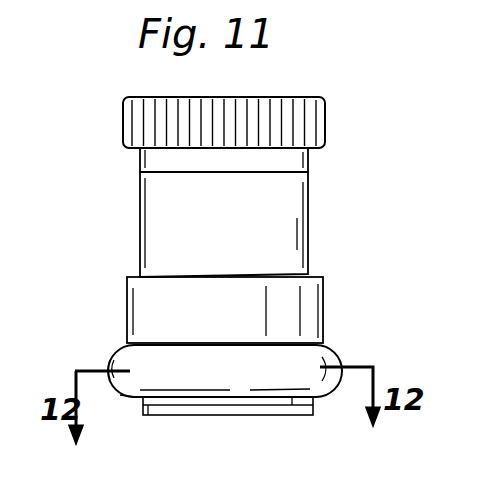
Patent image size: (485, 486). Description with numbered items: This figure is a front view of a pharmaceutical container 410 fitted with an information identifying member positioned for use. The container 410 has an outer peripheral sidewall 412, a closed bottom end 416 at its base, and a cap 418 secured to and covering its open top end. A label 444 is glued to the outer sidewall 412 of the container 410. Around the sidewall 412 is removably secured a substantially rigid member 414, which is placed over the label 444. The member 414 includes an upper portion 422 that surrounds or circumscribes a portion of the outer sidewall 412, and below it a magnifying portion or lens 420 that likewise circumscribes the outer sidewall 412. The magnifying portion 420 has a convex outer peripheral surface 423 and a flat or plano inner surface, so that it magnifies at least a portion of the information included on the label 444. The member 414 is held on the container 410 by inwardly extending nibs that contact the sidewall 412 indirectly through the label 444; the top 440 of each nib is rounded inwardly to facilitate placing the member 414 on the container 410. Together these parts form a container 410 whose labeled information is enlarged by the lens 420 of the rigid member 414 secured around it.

The pharmaceutical container 410 is at (103, 123).
The outer peripheral sidewall 412 is at (310, 160).
The substantially rigid member 414 is at (119, 291).
The closed bottom end 416 is at (246, 414).
The cap 418 is at (286, 108).
The magnifying portion or lens 420 is at (118, 350).
The upper portion 422 is at (318, 300).
The convex outer peripheral surface 423 is at (108, 366).
The top of nib 440 is at (110, 396).
The label 444 is at (245, 172).